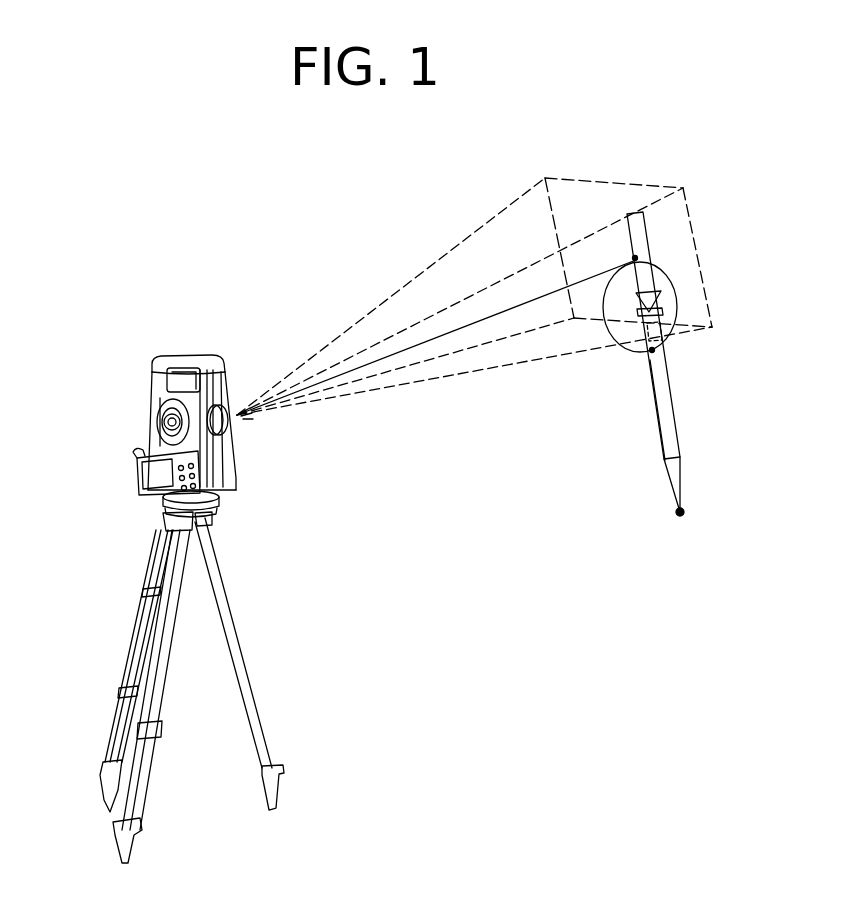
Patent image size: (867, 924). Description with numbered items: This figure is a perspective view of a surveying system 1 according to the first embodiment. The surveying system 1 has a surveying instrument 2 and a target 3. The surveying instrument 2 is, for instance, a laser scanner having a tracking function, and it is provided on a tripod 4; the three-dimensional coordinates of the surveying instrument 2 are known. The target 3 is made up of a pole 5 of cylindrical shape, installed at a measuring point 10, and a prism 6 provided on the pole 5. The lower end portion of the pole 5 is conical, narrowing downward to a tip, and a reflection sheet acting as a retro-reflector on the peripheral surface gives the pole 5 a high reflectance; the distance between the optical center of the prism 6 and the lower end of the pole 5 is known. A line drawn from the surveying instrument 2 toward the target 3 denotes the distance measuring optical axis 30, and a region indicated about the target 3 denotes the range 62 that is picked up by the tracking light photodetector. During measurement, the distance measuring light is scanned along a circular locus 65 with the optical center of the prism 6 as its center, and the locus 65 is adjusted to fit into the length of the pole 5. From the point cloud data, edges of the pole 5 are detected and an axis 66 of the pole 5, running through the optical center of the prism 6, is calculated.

The surveying system 1 is at (352, 193).
The surveying instrument 2 is at (148, 402).
The target 3 is at (660, 221).
The tripod 4 is at (233, 598).
The pole 5 is at (655, 412).
The prism 6 is at (662, 297).
The measuring point 10 is at (676, 514).
The distance measuring optical axis 30 is at (507, 313).
The range picked up by tracking light photodetector 62 is at (620, 182).
The circular locus 65 is at (668, 273).
The axis of the pole 66 is at (663, 331).